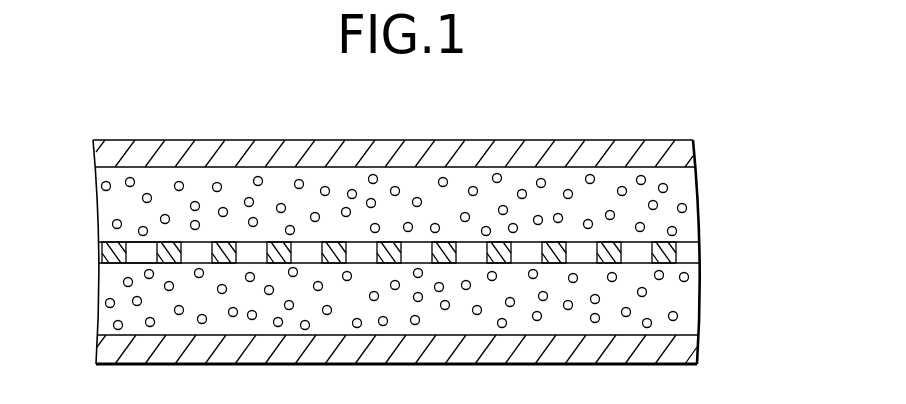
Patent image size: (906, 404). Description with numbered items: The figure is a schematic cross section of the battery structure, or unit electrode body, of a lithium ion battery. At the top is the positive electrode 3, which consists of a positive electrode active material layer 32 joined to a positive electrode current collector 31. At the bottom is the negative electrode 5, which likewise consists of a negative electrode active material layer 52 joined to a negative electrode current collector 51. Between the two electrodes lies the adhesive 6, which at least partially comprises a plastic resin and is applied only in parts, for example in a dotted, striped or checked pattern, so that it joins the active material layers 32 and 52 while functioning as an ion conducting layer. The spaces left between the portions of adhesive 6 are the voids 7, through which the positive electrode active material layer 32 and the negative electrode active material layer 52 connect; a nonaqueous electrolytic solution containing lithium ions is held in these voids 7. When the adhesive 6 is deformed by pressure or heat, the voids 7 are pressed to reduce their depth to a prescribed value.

The positive electrode 3 is at (452, 187).
The positive electrode current collector 31 is at (680, 155).
The positive electrode active material layer 32 is at (680, 200).
The negative electrode 5 is at (453, 315).
The negative electrode current collector 51 is at (680, 348).
The negative electrode active material layer 52 is at (680, 299).
The adhesive 6 is at (115, 262).
The voids 7 is at (141, 257).